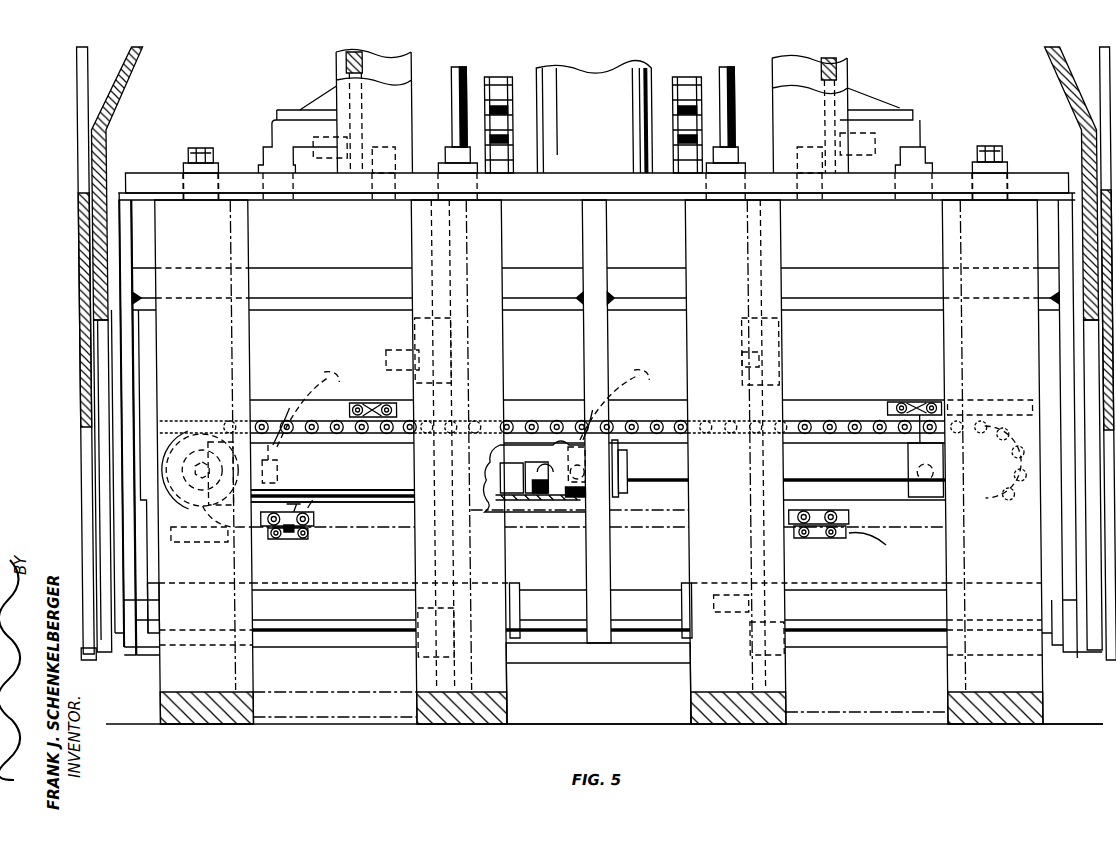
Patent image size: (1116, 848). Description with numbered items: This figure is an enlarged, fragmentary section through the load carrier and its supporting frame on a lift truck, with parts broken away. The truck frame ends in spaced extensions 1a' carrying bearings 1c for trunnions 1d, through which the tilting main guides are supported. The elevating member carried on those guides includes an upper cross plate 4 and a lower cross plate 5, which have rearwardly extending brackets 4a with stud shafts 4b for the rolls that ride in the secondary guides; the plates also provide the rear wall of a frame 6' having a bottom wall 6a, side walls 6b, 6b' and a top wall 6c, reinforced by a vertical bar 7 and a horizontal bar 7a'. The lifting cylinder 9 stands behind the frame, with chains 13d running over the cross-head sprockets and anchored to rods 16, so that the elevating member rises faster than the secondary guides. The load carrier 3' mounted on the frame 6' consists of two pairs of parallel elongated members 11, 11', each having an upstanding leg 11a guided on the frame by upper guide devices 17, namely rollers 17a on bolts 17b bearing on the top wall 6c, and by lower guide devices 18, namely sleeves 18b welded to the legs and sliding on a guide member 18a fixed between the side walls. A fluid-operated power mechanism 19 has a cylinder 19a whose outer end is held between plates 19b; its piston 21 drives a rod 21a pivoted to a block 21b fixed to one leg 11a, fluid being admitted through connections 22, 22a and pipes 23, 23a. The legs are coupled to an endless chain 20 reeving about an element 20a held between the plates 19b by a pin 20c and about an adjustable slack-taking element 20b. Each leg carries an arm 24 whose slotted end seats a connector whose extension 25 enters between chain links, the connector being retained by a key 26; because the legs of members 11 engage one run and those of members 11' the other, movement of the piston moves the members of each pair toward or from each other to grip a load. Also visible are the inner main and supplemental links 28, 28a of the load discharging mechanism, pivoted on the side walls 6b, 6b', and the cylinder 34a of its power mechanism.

The spaced extensions 1a' is at (591, 133).
The bearings 1c is at (862, 102).
The trunnions 1d is at (313, 143).
The load carrier 3' is at (1073, 702).
The upper cross plate 4 is at (152, 250).
The brackets 4a is at (452, 346).
The stud shafts 4b is at (397, 360).
The lower cross plate 5 is at (145, 530).
The frame 6' is at (485, 620).
The bottom wall 6a is at (554, 662).
The side wall 6b is at (151, 471).
The side wall 6b' is at (1039, 475).
The top wall 6c is at (882, 195).
The vertical bar 7 is at (609, 552).
The horizontal bar 7a' is at (596, 304).
The cylinder 9 is at (616, 173).
The elongated member 11 is at (471, 478).
The elongated member 11' is at (727, 474).
The upstanding leg 11a is at (243, 338).
The chains 13d is at (513, 98).
The rods 16 is at (452, 108).
The upper guide devices 17 is at (234, 150).
The roller 17a is at (183, 168).
The bolt 17b is at (200, 148).
The lower guide devices 18 is at (362, 592).
The guide member 18a is at (287, 626).
The sleeve 18b is at (518, 590).
The power mechanism 19 is at (660, 502).
The cylinder 19a is at (370, 504).
The plates 19b is at (168, 447).
The chain 20 is at (842, 455).
The element 20a is at (194, 541).
The element 20b is at (1000, 505).
The pin 20c is at (207, 462).
The piston 21 is at (537, 512).
The rod 21a is at (659, 474).
The block 21b is at (920, 500).
The fluid connection 22 is at (277, 476).
The fluid connection 22a is at (563, 466).
The fluid flow pipe 23 is at (282, 405).
The fluid flow pipe 23a is at (632, 375).
The arm 24 is at (266, 540).
The extension 25 is at (908, 447).
The key 26 is at (915, 402).
The inner main links 28 is at (83, 204).
The inner supplemental links 28a is at (95, 153).
The cylinder 34a is at (852, 535).